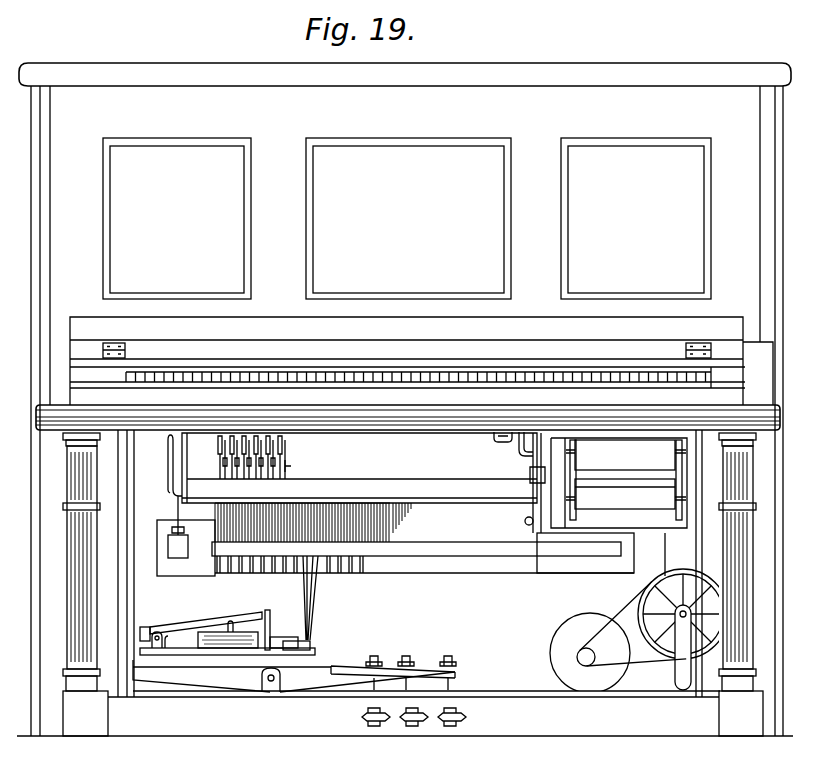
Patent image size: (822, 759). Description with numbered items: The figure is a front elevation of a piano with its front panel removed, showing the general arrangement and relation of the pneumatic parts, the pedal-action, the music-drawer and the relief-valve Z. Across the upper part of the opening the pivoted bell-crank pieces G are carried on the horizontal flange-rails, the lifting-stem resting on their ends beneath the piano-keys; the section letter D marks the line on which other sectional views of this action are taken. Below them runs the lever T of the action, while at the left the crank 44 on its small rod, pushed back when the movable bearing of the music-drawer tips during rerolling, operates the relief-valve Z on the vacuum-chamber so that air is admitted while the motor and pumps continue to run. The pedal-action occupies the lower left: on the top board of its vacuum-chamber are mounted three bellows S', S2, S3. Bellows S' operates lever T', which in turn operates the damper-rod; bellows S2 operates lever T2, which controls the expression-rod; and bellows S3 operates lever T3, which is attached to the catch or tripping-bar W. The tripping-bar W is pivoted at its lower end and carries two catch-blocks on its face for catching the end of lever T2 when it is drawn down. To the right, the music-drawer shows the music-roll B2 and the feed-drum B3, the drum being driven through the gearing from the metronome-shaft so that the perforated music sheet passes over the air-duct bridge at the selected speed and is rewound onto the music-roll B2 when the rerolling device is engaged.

The crank 44 is at (168, 466).
The bell-crank pieces G is at (217, 449).
The section line D is at (294, 463).
The lever T is at (423, 580).
The relief-valve Z is at (177, 560).
The lever T' is at (201, 619).
The lever T2 is at (268, 618).
The lever T3 is at (297, 632).
The tripping-bar W is at (279, 627).
The bellows S' is at (169, 642).
The bellows S2 is at (240, 649).
The bellows S3 is at (312, 645).
The music-roll B2 is at (626, 494).
The feed-drum B3 is at (626, 480).